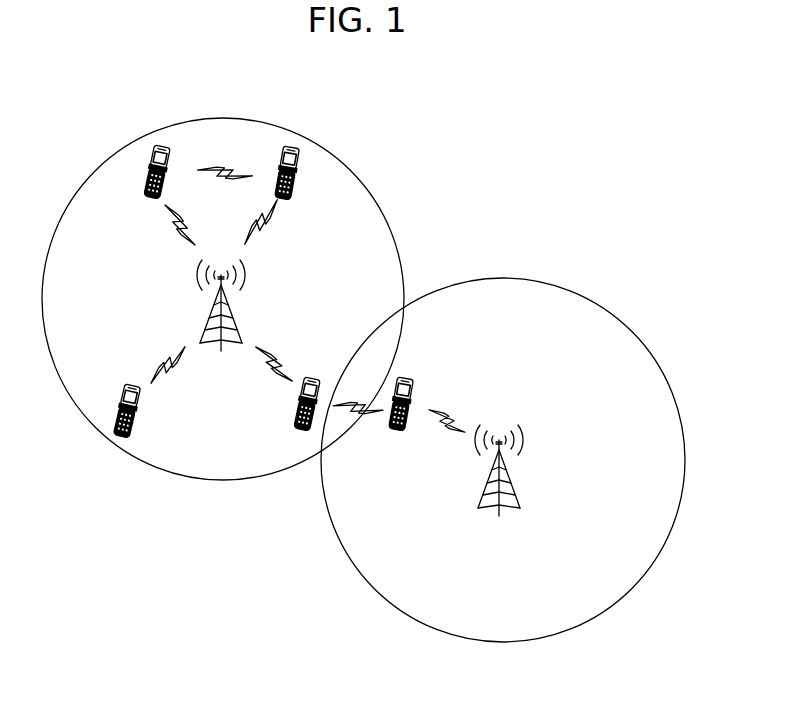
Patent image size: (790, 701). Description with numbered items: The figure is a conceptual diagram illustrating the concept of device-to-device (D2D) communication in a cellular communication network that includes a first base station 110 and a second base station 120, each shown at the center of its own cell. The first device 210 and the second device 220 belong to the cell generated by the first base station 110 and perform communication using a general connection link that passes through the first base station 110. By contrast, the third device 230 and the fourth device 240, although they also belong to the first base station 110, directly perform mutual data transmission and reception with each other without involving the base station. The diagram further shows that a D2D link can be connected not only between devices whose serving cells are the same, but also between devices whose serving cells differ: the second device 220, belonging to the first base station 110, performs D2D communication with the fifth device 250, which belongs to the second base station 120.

The first base station 110 is at (205, 320).
The second base station 120 is at (500, 435).
The device 1 210 is at (124, 440).
The device 2 220 is at (312, 378).
The device 3 230 is at (161, 146).
The device 4 240 is at (290, 148).
The device 5 250 is at (406, 378).